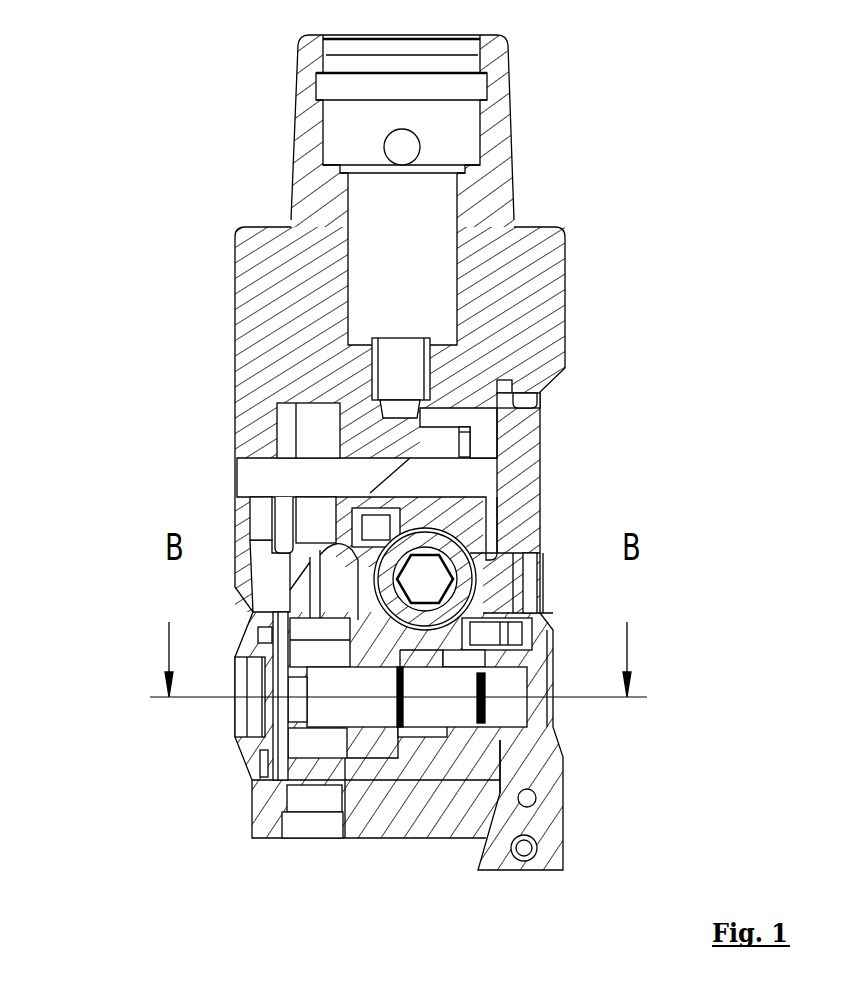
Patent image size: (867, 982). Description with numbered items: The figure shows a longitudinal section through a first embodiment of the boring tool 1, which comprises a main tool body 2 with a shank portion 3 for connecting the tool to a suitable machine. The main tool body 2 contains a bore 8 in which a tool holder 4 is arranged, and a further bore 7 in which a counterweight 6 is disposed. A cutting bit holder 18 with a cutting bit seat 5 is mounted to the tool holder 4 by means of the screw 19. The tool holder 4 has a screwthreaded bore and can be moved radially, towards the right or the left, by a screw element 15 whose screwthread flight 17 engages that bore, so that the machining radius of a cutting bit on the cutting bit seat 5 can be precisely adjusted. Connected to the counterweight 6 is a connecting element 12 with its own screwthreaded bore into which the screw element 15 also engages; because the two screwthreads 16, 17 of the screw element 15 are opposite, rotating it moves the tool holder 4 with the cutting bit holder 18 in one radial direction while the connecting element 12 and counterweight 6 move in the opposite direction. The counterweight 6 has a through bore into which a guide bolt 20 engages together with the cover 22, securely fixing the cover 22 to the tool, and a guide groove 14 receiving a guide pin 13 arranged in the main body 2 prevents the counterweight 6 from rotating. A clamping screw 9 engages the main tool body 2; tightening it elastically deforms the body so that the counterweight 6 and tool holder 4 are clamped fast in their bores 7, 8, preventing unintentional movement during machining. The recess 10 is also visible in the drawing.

The boring tool 1 is at (106, 432).
The main tool body 2 is at (566, 332).
The shank portion 3 is at (513, 153).
The tool holder 4 is at (487, 771).
The cutting bit seat 5 is at (547, 848).
The counterweight 6 is at (473, 427).
The further bore 7 is at (358, 470).
The bore 8 is at (300, 743).
The clamping screw 9 is at (488, 553).
The recess 10 is at (300, 565).
The connecting element 12 is at (343, 547).
The guide pin 13 is at (430, 365).
The guide groove 14 is at (527, 394).
The screw element 15 is at (280, 650).
The screwthread 16 is at (359, 730).
The screwthread flight 17 is at (425, 722).
The cutting bit holder 18 is at (553, 788).
The screw 19 is at (553, 657).
The guide bolt 20 is at (400, 470).
The cover 22 is at (545, 443).